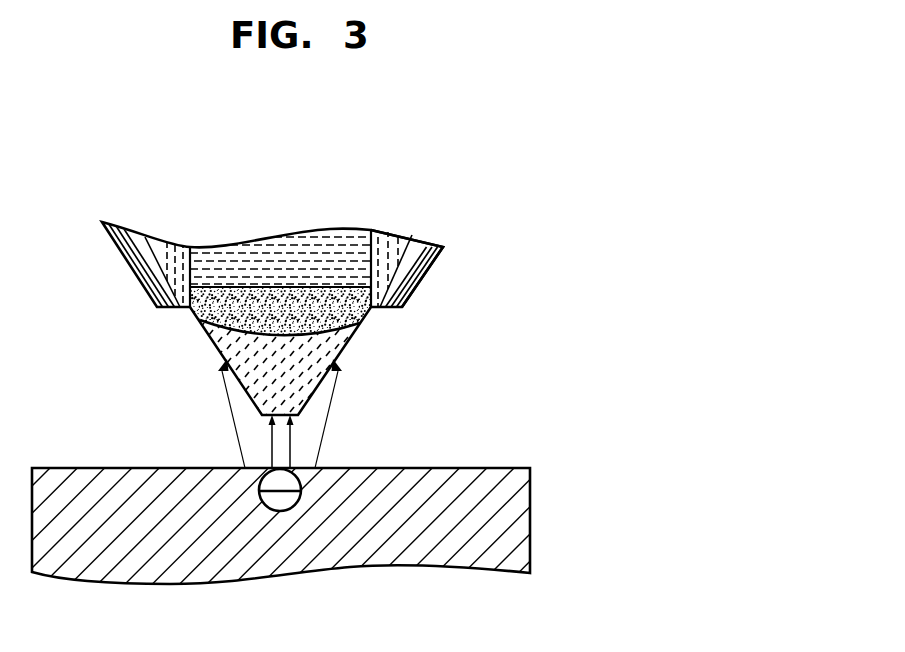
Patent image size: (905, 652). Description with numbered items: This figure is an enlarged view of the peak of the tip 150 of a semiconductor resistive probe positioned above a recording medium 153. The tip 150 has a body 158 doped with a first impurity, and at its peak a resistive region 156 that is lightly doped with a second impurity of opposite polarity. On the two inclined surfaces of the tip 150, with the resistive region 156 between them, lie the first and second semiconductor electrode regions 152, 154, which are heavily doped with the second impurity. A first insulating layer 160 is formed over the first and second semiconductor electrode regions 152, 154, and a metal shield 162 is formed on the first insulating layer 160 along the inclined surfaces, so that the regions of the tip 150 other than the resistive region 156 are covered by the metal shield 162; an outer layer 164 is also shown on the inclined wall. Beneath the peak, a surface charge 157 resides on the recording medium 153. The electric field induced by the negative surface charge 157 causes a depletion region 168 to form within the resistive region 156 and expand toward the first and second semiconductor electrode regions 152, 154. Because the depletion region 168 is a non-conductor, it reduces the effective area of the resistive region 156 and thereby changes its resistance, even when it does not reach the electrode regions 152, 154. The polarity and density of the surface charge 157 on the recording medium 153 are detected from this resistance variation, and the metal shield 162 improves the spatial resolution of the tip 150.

The tip 150 is at (400, 337).
The first semiconductor electrode region 152 is at (167, 247).
The recording medium 153 is at (522, 512).
The second semiconductor electrode region 154 is at (383, 230).
The resistive region 156 is at (210, 313).
The surface charge 157 is at (298, 467).
The body 158 is at (282, 241).
The first insulating layer 160 is at (413, 240).
The metal shield 162 is at (420, 272).
The outer layer 164 is at (445, 250).
The depletion region 168 is at (237, 338).